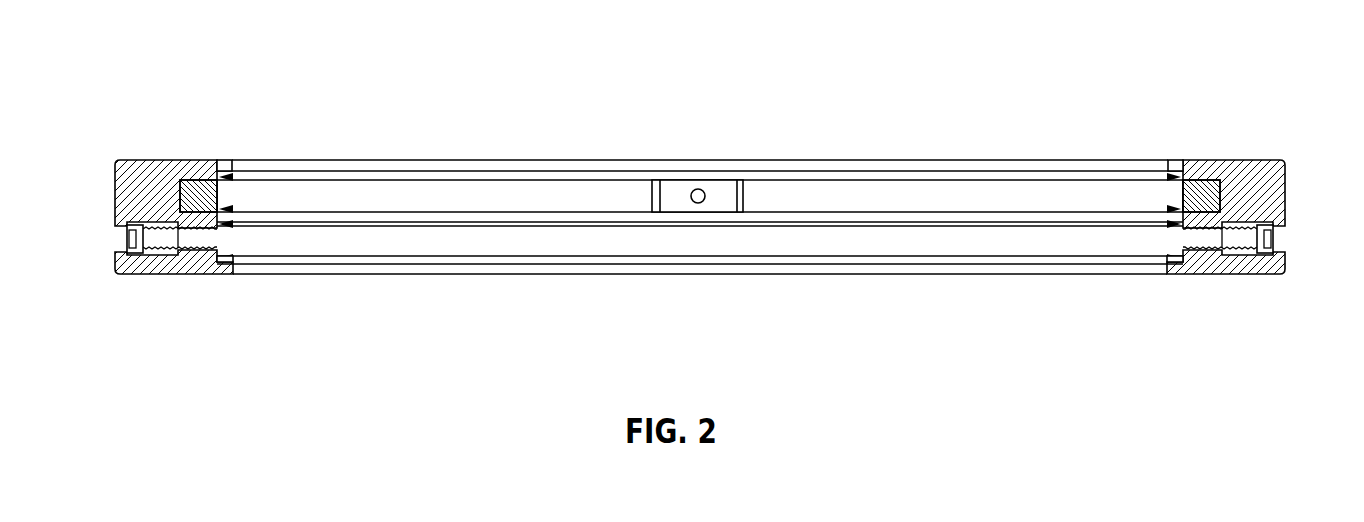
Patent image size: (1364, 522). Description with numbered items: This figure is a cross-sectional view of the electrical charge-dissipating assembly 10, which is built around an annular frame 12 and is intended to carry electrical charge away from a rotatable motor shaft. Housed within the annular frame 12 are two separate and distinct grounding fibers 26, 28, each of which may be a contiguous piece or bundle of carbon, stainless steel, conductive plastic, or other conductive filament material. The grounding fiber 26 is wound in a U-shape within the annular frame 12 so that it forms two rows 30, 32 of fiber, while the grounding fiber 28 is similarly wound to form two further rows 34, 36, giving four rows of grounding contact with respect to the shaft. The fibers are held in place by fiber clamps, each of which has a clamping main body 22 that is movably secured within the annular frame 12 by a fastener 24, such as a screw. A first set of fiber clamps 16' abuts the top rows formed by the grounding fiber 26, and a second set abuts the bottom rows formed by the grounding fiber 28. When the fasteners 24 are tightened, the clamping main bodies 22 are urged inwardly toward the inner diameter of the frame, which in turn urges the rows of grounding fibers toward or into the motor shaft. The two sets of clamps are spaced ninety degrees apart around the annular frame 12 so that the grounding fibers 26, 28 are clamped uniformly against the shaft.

The electrical charge-dissipating assembly 10 is at (130, 72).
The annular frame 12 is at (1233, 160).
The first set of fiber clamps 16' is at (700, 152).
The clamping main body 22 is at (677, 197).
The fastener 24 is at (698, 189).
The grounding fiber 26 is at (227, 161).
The grounding fiber 28 is at (233, 274).
The row of fiber 30 is at (233, 177).
The row of fiber 32 is at (233, 209).
The row of fiber 34 is at (233, 224).
The row of fiber 36 is at (233, 258).